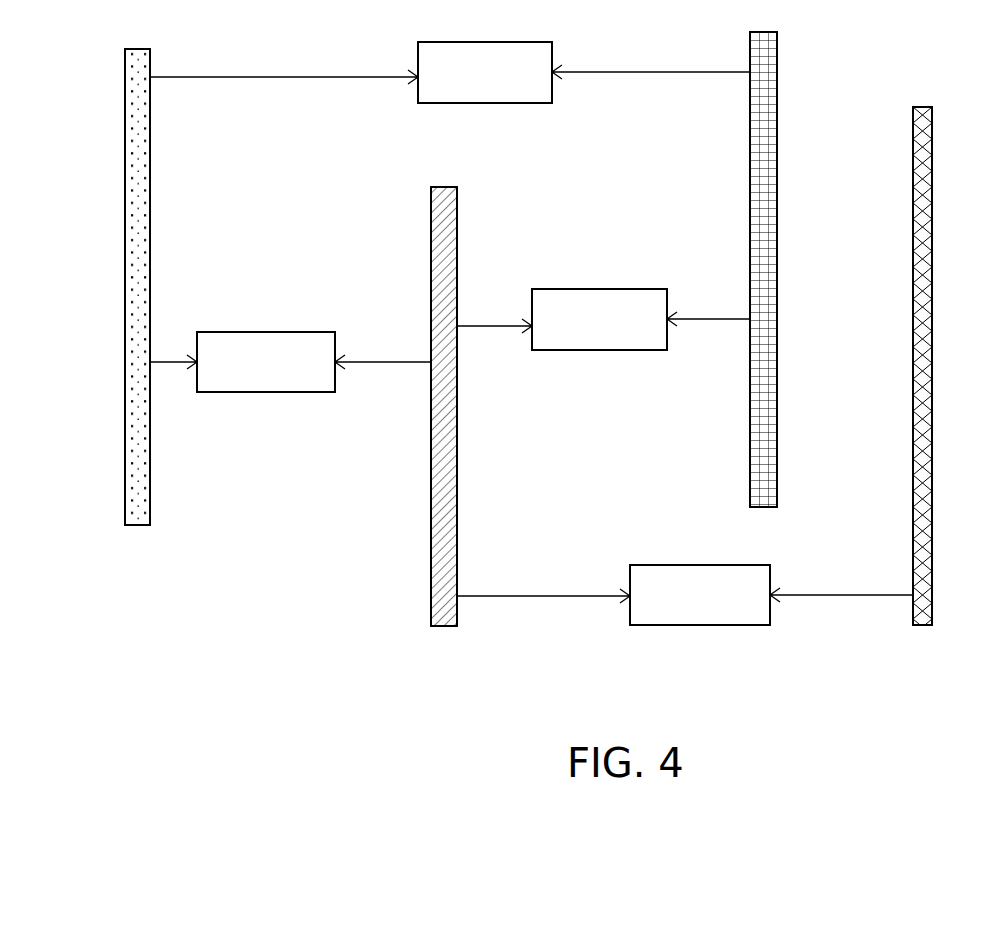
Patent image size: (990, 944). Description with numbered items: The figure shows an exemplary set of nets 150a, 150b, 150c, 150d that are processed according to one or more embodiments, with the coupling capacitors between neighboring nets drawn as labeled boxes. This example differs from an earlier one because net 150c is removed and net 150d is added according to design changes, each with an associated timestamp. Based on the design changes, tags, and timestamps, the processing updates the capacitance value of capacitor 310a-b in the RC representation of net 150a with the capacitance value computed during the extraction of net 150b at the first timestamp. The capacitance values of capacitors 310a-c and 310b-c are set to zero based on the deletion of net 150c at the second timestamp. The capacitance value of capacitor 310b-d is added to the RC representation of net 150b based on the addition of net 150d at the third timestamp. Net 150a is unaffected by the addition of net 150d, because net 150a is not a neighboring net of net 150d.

The net 150a is at (124, 253).
The net 150b is at (431, 563).
The net 150c is at (750, 173).
The net 150d is at (913, 156).
The capacitor 310a-c is at (535, 91).
The capacitor 310a-b is at (318, 380).
The capacitor 310b-c is at (650, 338).
The capacitor 310b-d is at (753, 613).